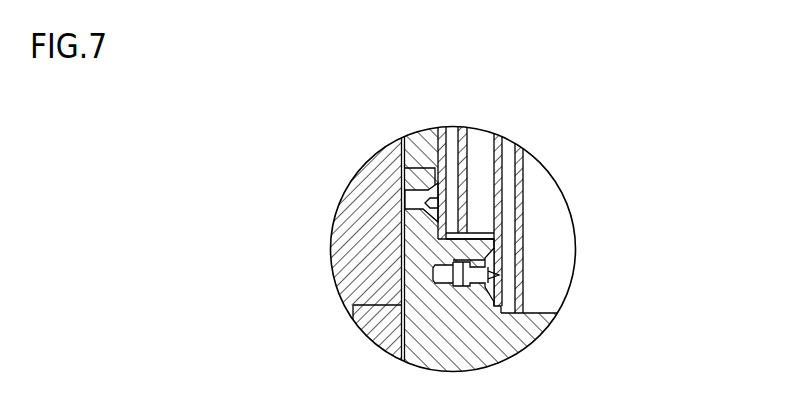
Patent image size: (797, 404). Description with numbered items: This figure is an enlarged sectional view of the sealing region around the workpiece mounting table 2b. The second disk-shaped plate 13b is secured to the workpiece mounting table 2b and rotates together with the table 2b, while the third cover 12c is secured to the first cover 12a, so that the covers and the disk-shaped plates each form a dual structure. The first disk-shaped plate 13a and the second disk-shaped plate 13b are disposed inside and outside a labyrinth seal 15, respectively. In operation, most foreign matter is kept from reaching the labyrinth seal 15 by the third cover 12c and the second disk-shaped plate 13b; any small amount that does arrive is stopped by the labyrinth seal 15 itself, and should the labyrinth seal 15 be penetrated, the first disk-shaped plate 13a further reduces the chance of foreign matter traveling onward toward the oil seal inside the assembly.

The workpiece mounting table 2b is at (496, 338).
The first disk-shaped plate 13a is at (448, 127).
The first cover 12a is at (464, 148).
The second disk-shaped plate 13b is at (499, 158).
The third cover 12c is at (519, 192).
The labyrinth seal 15 is at (493, 233).